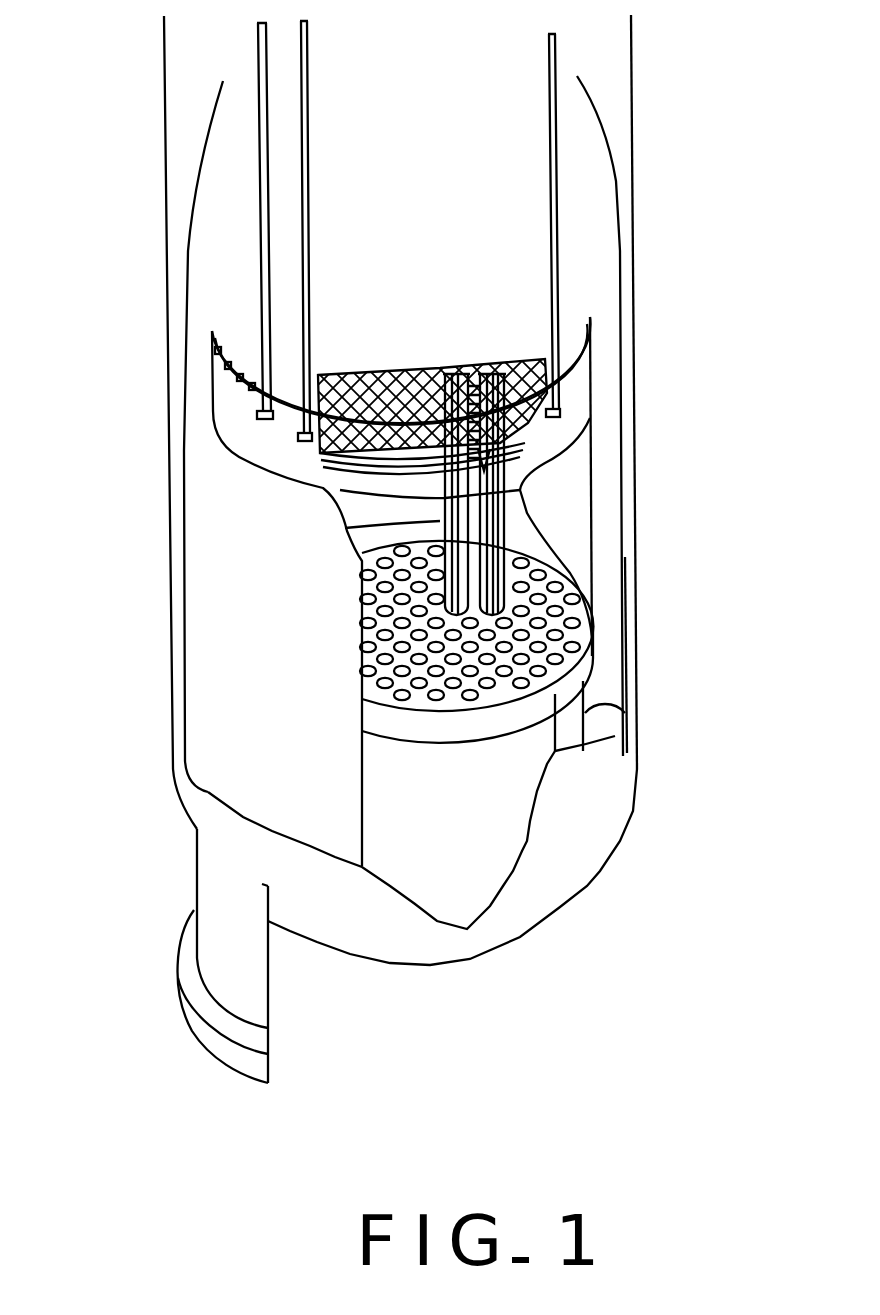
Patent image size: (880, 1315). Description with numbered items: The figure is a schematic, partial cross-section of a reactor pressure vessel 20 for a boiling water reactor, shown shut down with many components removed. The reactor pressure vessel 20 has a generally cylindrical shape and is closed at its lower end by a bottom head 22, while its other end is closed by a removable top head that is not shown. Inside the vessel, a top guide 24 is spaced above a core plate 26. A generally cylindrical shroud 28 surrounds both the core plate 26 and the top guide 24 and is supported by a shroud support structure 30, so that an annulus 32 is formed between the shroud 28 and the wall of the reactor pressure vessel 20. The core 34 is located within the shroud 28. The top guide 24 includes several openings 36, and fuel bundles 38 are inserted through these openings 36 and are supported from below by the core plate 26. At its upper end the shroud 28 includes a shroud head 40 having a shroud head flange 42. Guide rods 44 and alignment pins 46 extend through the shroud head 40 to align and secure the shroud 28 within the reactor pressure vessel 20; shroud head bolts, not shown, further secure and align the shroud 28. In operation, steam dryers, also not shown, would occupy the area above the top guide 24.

The reactor pressure vessel 20 is at (646, 78).
The bottom head 22 is at (587, 885).
The top guide 24 is at (370, 453).
The core plate 26 is at (552, 693).
The shroud 28 is at (592, 643).
The shroud support structure 30 is at (553, 733).
The annulus 32 is at (616, 553).
The core 34 is at (573, 473).
The openings 36 is at (400, 462).
The fuel bundles 38 is at (478, 492).
The shroud head 40 is at (578, 396).
The shroud head flange 42 is at (213, 360).
The guide rods 44 is at (260, 152).
The alignment pins 46 is at (543, 435).